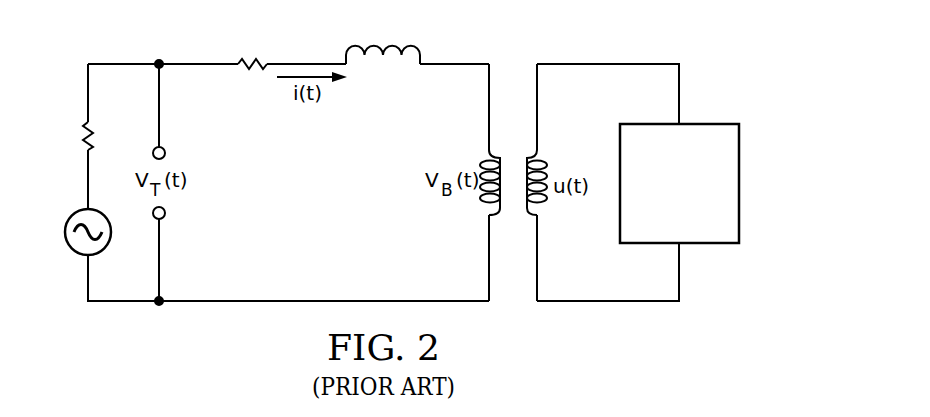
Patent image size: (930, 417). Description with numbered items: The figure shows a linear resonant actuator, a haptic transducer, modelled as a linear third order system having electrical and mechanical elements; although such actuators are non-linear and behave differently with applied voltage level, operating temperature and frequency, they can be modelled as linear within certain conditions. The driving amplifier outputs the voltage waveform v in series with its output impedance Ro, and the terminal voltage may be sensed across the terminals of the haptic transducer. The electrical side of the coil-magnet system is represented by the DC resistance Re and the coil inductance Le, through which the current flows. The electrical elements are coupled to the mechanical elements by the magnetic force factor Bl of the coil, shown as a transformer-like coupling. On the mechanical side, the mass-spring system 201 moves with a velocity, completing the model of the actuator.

The mass-spring system 201 is at (739, 183).
The output impedance Ro is at (71, 136).
The DC resistance Re is at (252, 51).
The coil inductance Le is at (383, 41).
The magnetic force factor Bl is at (513, 126).
The voltage waveform v is at (69, 232).